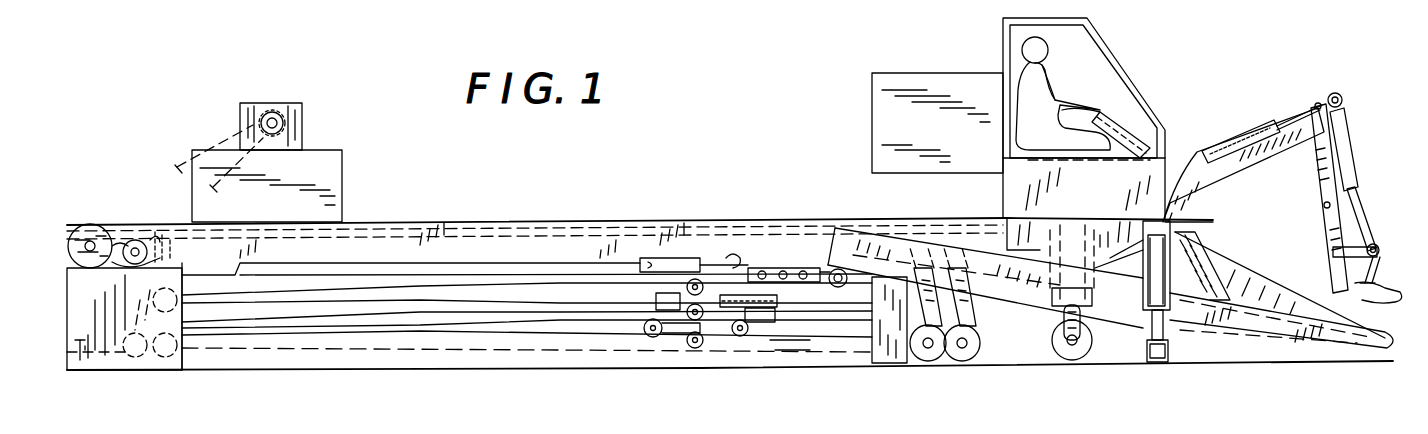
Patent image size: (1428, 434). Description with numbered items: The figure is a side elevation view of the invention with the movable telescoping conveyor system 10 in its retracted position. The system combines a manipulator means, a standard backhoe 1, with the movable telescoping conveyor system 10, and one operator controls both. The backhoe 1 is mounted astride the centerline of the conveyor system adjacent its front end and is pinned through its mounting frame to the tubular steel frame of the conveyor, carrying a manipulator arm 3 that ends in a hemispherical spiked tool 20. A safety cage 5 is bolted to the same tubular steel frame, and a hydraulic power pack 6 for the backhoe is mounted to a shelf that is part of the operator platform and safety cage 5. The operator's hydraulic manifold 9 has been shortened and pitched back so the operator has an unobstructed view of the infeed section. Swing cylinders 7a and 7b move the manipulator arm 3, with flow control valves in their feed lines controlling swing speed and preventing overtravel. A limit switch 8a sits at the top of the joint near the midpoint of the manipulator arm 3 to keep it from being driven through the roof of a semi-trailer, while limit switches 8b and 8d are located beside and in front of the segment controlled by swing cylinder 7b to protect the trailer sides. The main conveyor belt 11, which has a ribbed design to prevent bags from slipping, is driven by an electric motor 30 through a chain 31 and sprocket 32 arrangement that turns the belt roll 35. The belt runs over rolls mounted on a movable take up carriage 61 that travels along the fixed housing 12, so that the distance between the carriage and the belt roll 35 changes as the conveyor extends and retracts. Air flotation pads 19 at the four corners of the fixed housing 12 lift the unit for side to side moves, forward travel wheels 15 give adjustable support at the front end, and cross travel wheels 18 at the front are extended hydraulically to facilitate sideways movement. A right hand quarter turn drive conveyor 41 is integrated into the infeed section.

The backhoe 1 is at (1145, 45).
The manipulator arm 3 is at (1278, 82).
The safety cage 5 is at (1002, 32).
The hydraulic power pack 6 is at (870, 124).
The swing cylinder 7a is at (1220, 131).
The swing cylinder 7b is at (1352, 166).
The limit switch 8a is at (1342, 94).
The limit switch 8b is at (1312, 206).
The limit switch 8d is at (1380, 244).
The operator's hydraulic manifold 9 is at (1128, 126).
The movable telescoping conveyor system 10 is at (607, 222).
The main conveyor belt 11 is at (130, 228).
The fixed housing 12 is at (430, 222).
The forward travel wheels 15 is at (932, 366).
The cross travel wheels 18 is at (1160, 368).
The air flotation pads 19 is at (150, 376).
The hemispherical spiked tool 20 is at (1398, 282).
The electric motor 30 is at (266, 100).
The chain 31 is at (207, 145).
The sprocket 32 is at (290, 122).
The belt roll 35 is at (76, 226).
The right hand quarter turn drive conveyor 41 is at (1296, 275).
The movable take up carriage 61 is at (727, 338).